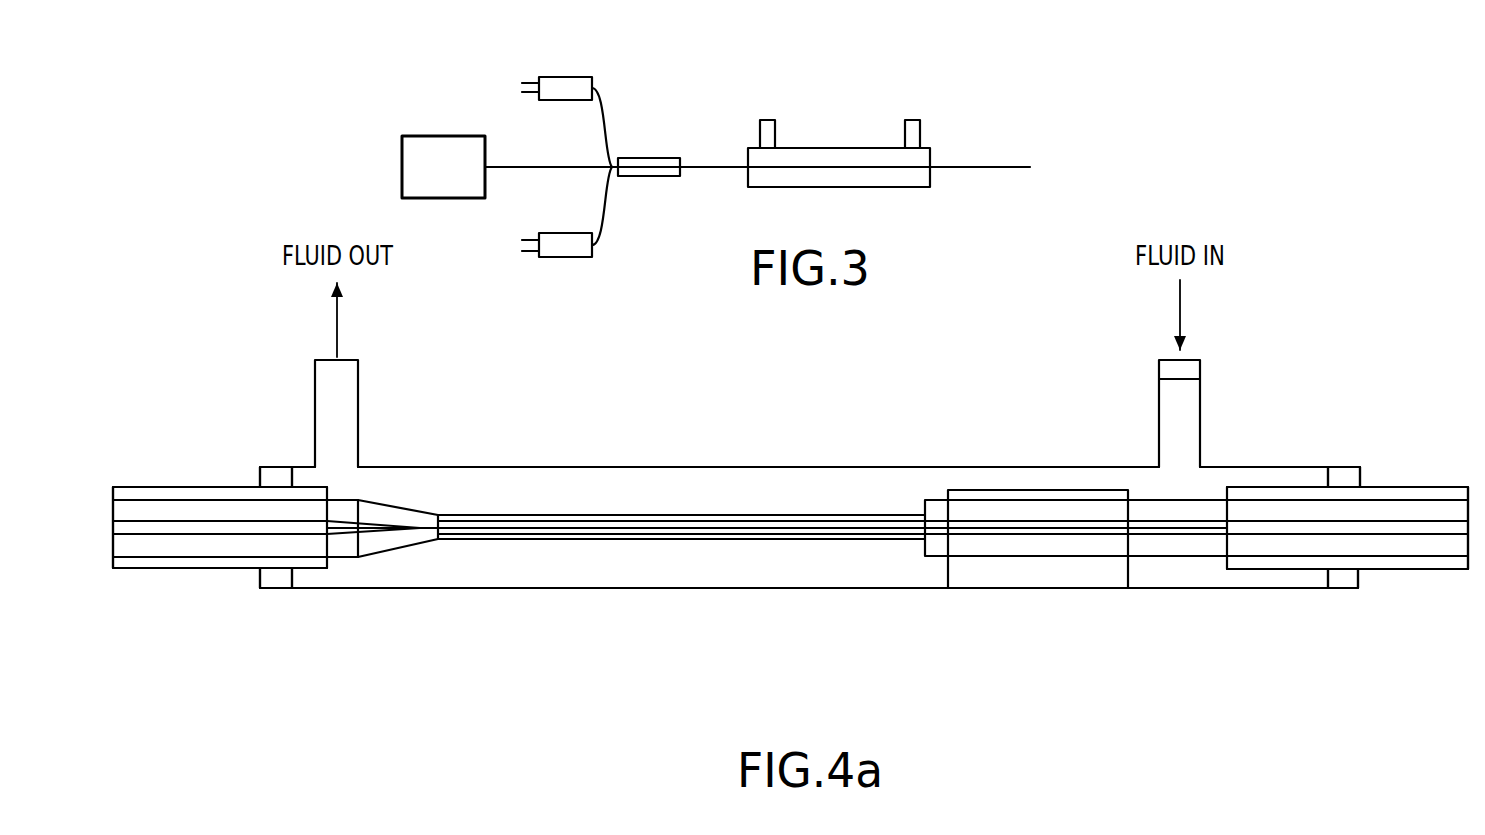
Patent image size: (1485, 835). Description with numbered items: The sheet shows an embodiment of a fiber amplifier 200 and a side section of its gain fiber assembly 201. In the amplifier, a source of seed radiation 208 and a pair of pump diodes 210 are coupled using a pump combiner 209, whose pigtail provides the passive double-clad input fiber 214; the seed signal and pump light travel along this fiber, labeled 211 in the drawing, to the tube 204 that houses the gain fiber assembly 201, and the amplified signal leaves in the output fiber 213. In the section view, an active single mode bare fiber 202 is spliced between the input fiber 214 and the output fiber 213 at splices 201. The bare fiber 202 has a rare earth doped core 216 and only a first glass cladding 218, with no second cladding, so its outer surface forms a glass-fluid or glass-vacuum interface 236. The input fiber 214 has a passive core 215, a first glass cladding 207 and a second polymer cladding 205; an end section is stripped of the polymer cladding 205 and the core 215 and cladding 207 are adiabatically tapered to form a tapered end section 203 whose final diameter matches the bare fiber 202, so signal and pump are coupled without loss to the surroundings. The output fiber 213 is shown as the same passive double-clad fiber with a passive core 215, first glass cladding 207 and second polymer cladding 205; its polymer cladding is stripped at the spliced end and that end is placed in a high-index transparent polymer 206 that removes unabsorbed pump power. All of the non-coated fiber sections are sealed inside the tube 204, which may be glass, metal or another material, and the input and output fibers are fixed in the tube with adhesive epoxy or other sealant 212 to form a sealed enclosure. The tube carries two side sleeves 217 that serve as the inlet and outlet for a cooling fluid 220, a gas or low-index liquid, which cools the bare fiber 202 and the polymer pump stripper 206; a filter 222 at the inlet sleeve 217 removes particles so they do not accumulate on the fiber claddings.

In FIG. 3, the fiber amplifier 200 is at (325, 103).
In FIG. 4a, the gain fiber assembly / splice 201 is at (440, 513).
In FIG. 4a, the bare fiber 202 is at (642, 612).
In FIG. 4a, the tapered end section 203 is at (407, 540).
In FIG. 3, the tube 204 is at (838, 148).
In FIG. 4a, the tube 204 is at (687, 467).
In FIG. 4a, the second polymer cladding 205 is at (232, 493).
In FIG. 4a, the high-index transparent polymer 206 is at (1032, 575).
In FIG. 4a, the first glass cladding 207 is at (128, 487).
In FIG. 3, the source of seed radiation 208 is at (432, 136).
In FIG. 3, the pump combiner 209 is at (655, 158).
In FIG. 3, the pump diodes 210 is at (552, 233).
In FIG. 3, the optical fiber 211 is at (998, 167).
In FIG. 4a, the sealant/adhesive 212 is at (277, 588).
In FIG. 4a, the output fiber 213 is at (1418, 585).
In FIG. 4a, the input fiber 214 is at (146, 590).
In FIG. 4a, the passive core 215 is at (300, 530).
In FIG. 4a, the doped core 216 is at (790, 538).
In FIG. 4a, the side sleeves 217 is at (358, 392).
In FIG. 4a, the first glass cladding 218 is at (816, 515).
In FIG. 4a, the cooling fluid 220 is at (268, 355).
In FIG. 4a, the filter 222 is at (1200, 368).
In FIG. 4a, the glass-fluid or glass-vacuum interface 236 is at (548, 504).